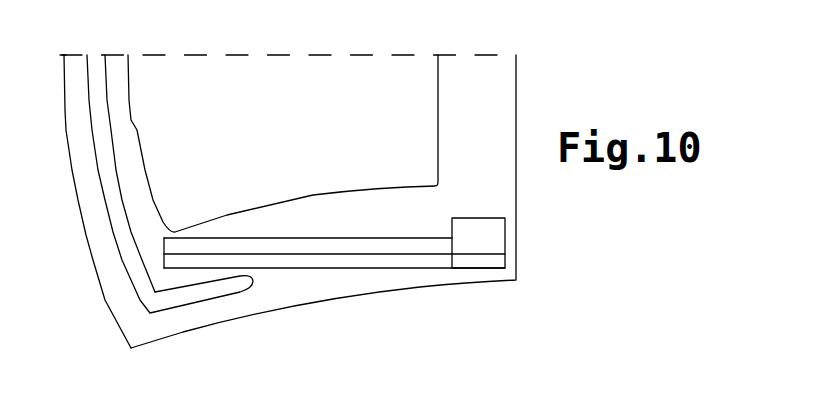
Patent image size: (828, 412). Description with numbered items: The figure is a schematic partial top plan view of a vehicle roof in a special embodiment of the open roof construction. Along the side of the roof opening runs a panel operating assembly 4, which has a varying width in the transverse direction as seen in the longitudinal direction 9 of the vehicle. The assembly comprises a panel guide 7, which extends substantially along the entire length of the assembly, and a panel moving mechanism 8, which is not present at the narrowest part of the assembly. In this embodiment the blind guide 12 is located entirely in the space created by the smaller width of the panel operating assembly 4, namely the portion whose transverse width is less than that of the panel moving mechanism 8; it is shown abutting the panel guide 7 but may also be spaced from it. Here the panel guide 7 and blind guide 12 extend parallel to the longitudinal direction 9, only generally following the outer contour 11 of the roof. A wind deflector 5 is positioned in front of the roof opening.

The panel operating assembly 4 is at (420, 268).
The wind deflector 5 is at (96, 66).
The panel guide 7 is at (338, 258).
The panel moving mechanism 8 is at (482, 250).
The longitudinal direction 9 is at (203, 55).
The outer contour 11 is at (183, 333).
The blind guide 12 is at (271, 244).